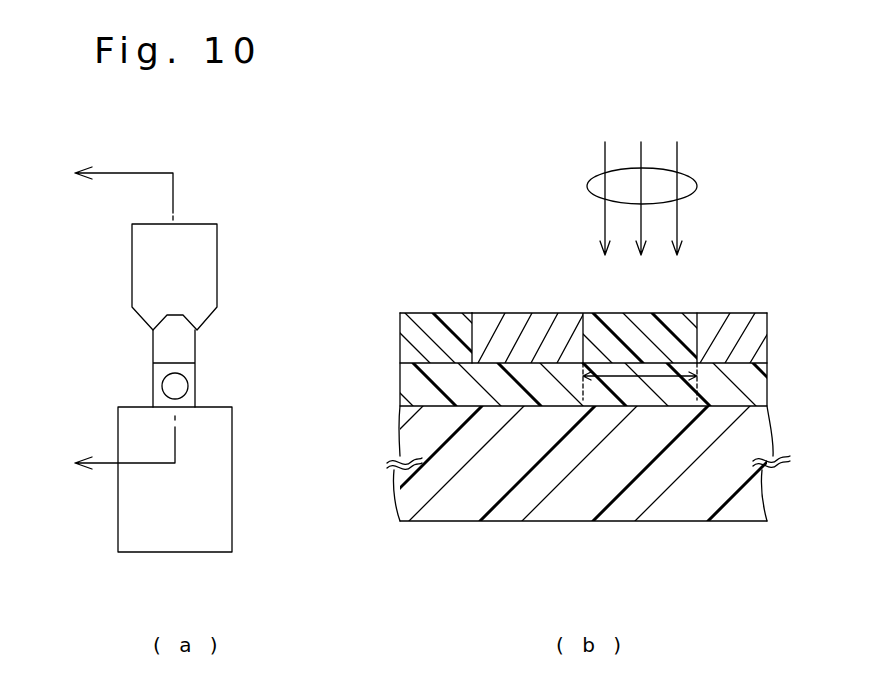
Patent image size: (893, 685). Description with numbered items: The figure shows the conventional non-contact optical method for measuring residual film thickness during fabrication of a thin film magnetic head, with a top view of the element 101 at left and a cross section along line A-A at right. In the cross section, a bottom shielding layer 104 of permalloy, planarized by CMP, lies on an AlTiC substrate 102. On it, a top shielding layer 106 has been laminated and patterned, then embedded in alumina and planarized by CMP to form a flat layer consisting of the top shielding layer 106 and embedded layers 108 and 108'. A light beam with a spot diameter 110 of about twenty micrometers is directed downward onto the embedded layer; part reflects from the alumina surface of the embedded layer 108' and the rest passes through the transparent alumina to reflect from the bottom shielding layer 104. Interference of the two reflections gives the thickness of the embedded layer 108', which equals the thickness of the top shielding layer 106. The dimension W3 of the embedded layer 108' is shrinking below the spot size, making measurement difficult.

The element 101 is at (214, 195).
The AlTiC substrate 102 is at (463, 513).
The bottom shielding layer 104 is at (132, 263).
The top shielding layer 106 is at (153, 350).
The embedded layer 108 is at (446, 280).
The embedded layer 108' is at (619, 302).
The spot diameter 110 is at (180, 380).
The dimension of the embedded layer W3 is at (652, 377).